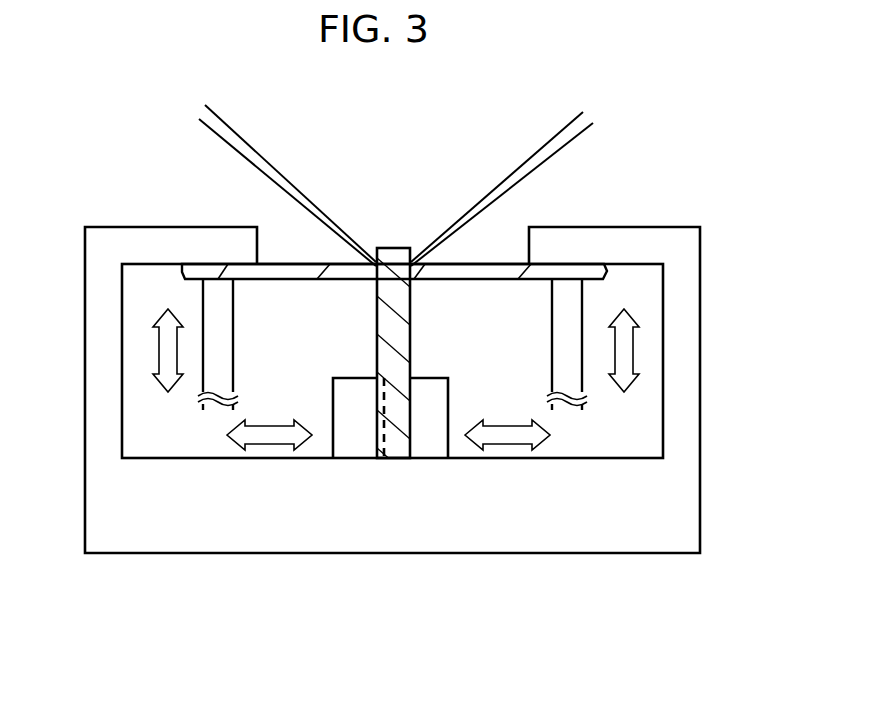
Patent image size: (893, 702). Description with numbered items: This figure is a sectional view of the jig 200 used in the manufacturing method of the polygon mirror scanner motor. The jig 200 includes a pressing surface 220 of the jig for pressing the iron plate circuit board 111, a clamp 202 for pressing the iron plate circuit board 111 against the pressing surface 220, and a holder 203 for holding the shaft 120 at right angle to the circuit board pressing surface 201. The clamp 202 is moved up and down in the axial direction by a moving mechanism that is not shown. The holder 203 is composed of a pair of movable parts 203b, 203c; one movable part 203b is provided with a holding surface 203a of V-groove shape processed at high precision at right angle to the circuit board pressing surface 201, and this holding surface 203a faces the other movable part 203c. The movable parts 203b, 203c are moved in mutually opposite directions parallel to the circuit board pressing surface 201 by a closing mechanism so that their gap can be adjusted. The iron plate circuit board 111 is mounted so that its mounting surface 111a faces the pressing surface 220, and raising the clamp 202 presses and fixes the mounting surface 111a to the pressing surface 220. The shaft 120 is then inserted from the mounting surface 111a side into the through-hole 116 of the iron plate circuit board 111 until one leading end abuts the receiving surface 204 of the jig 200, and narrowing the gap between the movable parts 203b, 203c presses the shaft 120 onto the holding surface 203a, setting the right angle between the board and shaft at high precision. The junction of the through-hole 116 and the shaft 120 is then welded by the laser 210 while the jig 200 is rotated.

The jig 200 is at (167, 555).
The circuit board pressing surface 201 is at (414, 207).
The mounting surface 111a is at (578, 263).
The iron plate circuit board 111 is at (414, 207).
The through-hole 116 is at (432, 344).
The shaft 120 is at (336, 305).
The clamp 202 is at (217, 313).
The pressing surface of the jig 220 is at (245, 265).
The laser 210 is at (265, 160).
The holder 203 is at (326, 520).
The holding surface 203a is at (378, 378).
The movable part 203b is at (350, 427).
The movable part 203c is at (420, 407).
The receiving surface 204 is at (393, 432).